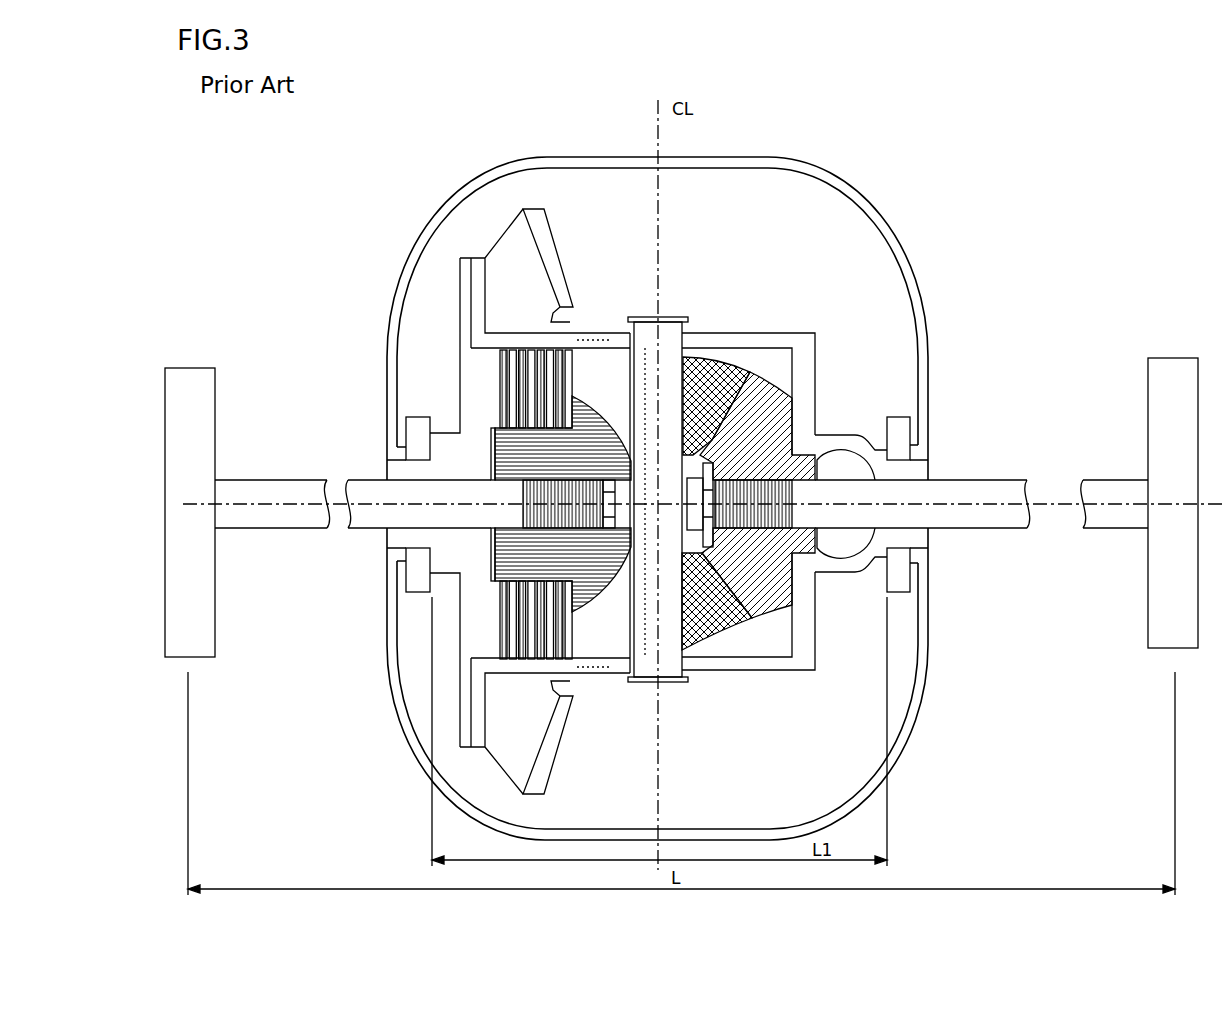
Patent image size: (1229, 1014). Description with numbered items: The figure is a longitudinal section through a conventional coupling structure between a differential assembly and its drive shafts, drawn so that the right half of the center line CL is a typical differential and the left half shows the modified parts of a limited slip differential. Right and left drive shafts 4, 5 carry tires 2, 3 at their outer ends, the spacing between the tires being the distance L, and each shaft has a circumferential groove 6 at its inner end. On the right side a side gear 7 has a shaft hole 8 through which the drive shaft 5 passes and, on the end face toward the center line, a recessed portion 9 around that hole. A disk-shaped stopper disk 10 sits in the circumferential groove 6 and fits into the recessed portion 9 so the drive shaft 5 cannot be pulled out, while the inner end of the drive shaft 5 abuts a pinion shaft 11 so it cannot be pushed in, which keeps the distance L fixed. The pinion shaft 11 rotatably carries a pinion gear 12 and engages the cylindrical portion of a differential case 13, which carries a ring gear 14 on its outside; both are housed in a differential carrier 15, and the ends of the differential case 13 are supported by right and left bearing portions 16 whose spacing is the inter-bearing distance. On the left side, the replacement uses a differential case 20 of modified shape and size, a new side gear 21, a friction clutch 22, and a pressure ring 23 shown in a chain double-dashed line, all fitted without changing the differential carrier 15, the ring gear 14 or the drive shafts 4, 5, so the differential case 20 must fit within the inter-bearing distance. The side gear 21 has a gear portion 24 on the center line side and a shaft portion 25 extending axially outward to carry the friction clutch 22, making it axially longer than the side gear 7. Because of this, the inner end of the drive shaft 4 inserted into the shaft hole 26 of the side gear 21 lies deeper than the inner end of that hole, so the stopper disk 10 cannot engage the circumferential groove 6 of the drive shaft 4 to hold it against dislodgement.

The tire 2 is at (190, 378).
The tire 3 is at (1173, 372).
The drive shaft 4 is at (270, 490).
The drive shaft 5 is at (989, 487).
The circumferential groove 6 is at (540, 502).
The side gear 7 is at (767, 495).
The shaft hole 8 is at (762, 527).
The recessed portion 9 is at (748, 378).
The stopper disk 10 is at (705, 530).
The pinion shaft 11 is at (668, 333).
The pinion gear 12 is at (712, 365).
The differential case 13 is at (788, 340).
The ring gear 14 is at (543, 222).
The differential carrier 15 is at (566, 157).
The bearing portion 16 is at (418, 418).
The differential case 20 is at (562, 338).
The side gear 21 is at (585, 625).
The friction clutch 22 is at (483, 383).
The pressure ring 23 is at (613, 355).
The gear portion 24 is at (605, 405).
The shaft portion 25 is at (530, 562).
The shaft hole 26 is at (614, 520).